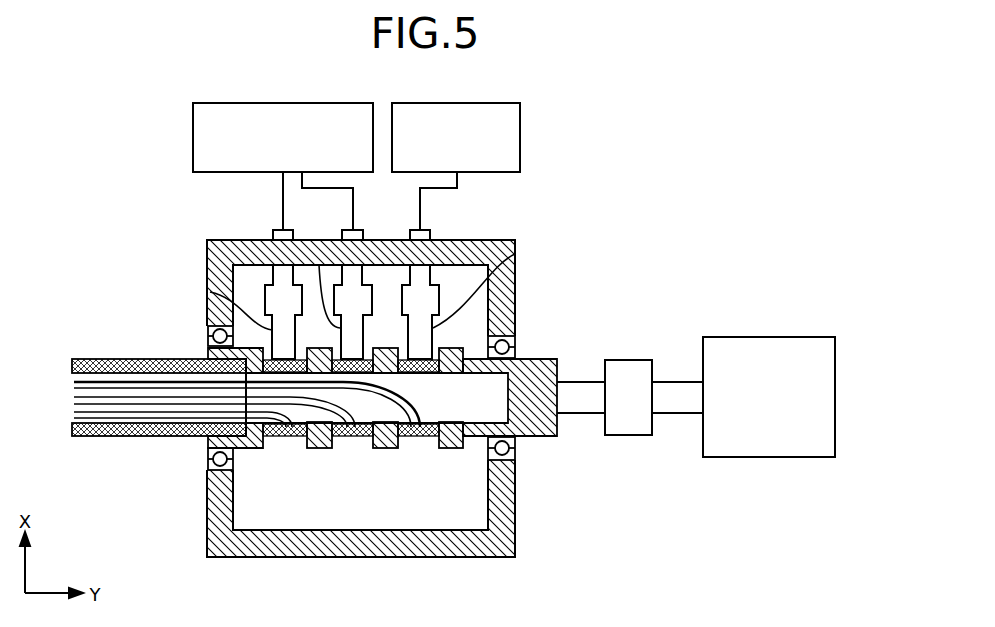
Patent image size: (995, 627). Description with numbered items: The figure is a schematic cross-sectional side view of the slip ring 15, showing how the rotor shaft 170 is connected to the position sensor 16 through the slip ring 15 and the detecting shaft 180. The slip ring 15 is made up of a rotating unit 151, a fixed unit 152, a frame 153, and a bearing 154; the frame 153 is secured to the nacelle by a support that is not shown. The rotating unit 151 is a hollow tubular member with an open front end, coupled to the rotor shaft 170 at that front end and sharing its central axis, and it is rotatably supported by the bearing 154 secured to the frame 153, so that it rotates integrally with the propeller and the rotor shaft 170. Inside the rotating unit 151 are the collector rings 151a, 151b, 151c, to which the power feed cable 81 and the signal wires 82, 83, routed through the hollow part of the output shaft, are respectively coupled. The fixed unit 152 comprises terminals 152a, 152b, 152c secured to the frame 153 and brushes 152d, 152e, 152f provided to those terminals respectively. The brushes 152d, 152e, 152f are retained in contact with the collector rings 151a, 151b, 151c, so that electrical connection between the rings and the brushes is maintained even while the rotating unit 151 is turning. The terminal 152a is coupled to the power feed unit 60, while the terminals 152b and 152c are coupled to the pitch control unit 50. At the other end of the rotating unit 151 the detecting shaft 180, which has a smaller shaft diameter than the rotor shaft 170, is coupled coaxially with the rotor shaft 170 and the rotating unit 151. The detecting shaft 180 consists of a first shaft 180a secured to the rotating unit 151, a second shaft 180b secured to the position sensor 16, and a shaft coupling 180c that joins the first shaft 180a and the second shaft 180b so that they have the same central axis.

The slip ring 15 is at (333, 365).
The position sensor 16 is at (772, 337).
The pitch control unit 50 is at (300, 103).
The power feed unit 60 is at (462, 103).
The power feed cable 81 is at (185, 390).
The signal wire 82 is at (140, 405).
The signal wire 83 is at (97, 417).
The rotating unit 151 is at (401, 423).
The collector ring 151a is at (418, 438).
The collector ring 151b is at (352, 438).
The collector ring 151c is at (283, 438).
The fixed unit 152 is at (363, 267).
The terminal 152a is at (428, 233).
The terminal 152b is at (362, 233).
The terminal 152c is at (277, 230).
The brush 152d is at (515, 254).
The brush 152e is at (319, 265).
The brush 152f is at (210, 292).
The frame 153 is at (207, 256).
The bearing 154 is at (207, 324).
The rotor shaft 170 is at (93, 358).
The detecting shaft 180 is at (626, 345).
The first shaft 180a is at (580, 382).
The second shaft 180b is at (680, 353).
The shaft coupling 180c is at (628, 360).